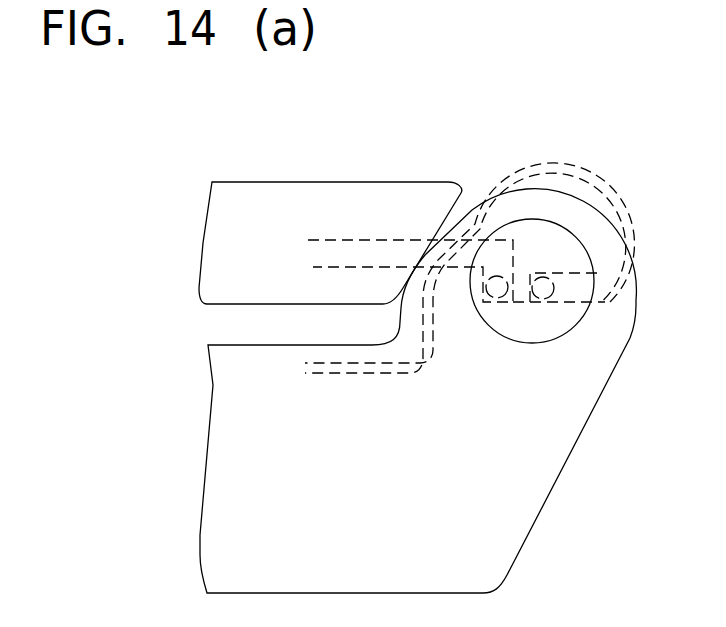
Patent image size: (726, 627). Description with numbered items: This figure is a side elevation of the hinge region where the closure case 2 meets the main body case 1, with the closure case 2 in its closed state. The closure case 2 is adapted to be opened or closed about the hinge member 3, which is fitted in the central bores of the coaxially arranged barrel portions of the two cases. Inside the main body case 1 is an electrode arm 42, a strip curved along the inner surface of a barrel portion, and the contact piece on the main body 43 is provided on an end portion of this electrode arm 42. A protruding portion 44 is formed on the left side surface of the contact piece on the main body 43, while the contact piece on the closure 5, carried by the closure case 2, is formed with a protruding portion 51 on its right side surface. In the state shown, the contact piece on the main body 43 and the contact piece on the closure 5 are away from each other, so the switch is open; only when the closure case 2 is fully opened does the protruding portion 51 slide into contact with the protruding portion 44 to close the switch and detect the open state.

The main body case 1 is at (538, 480).
The closure case 2 is at (337, 202).
The hinge member 3 is at (543, 252).
The electrode arm 42 is at (518, 200).
The contact piece on the main body 43 is at (542, 290).
The protruding portion 44 is at (513, 285).
The contact piece on the closure 5 is at (538, 290).
The protruding portion 51 is at (492, 289).